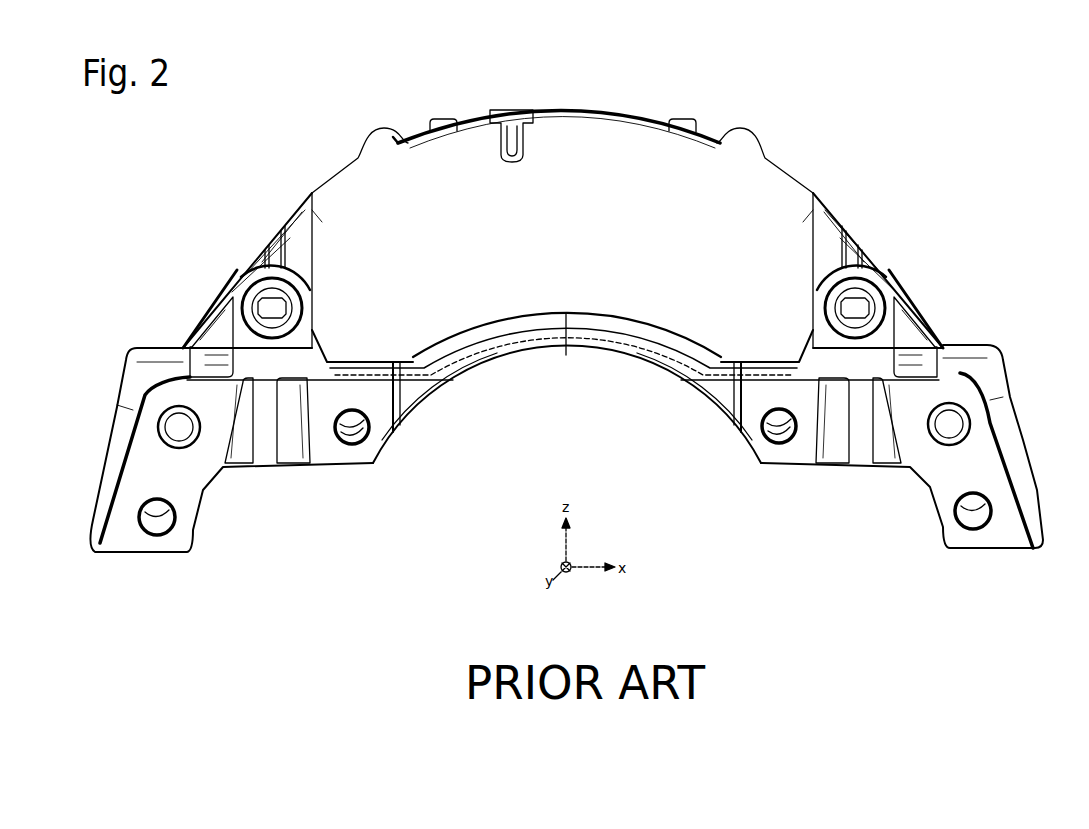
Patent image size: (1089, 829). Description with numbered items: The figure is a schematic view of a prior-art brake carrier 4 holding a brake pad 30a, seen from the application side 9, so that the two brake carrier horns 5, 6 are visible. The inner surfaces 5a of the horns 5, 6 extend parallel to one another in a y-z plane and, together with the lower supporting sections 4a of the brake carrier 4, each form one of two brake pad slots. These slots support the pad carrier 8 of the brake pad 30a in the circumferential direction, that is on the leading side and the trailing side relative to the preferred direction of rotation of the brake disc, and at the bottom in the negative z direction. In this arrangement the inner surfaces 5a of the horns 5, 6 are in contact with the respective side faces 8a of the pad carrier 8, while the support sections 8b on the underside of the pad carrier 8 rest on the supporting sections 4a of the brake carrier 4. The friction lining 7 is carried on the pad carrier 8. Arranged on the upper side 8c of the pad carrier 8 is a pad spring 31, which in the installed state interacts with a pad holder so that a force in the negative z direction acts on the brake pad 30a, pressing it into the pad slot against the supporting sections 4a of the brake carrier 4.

The brake carrier 4 is at (1006, 344).
The supporting sections 4a is at (373, 382).
The brake carrier horn 5 is at (832, 212).
The inner surface 5a is at (318, 214).
The brake carrier horn 6 is at (303, 212).
The friction lining 7 is at (352, 150).
The pad carrier 8 is at (374, 205).
The side faces 8a is at (300, 226).
The support sections 8b is at (343, 382).
The upper side 8c is at (632, 112).
The application side 9 is at (740, 517).
The brake pad 30a is at (768, 129).
The pad spring 31 is at (529, 108).